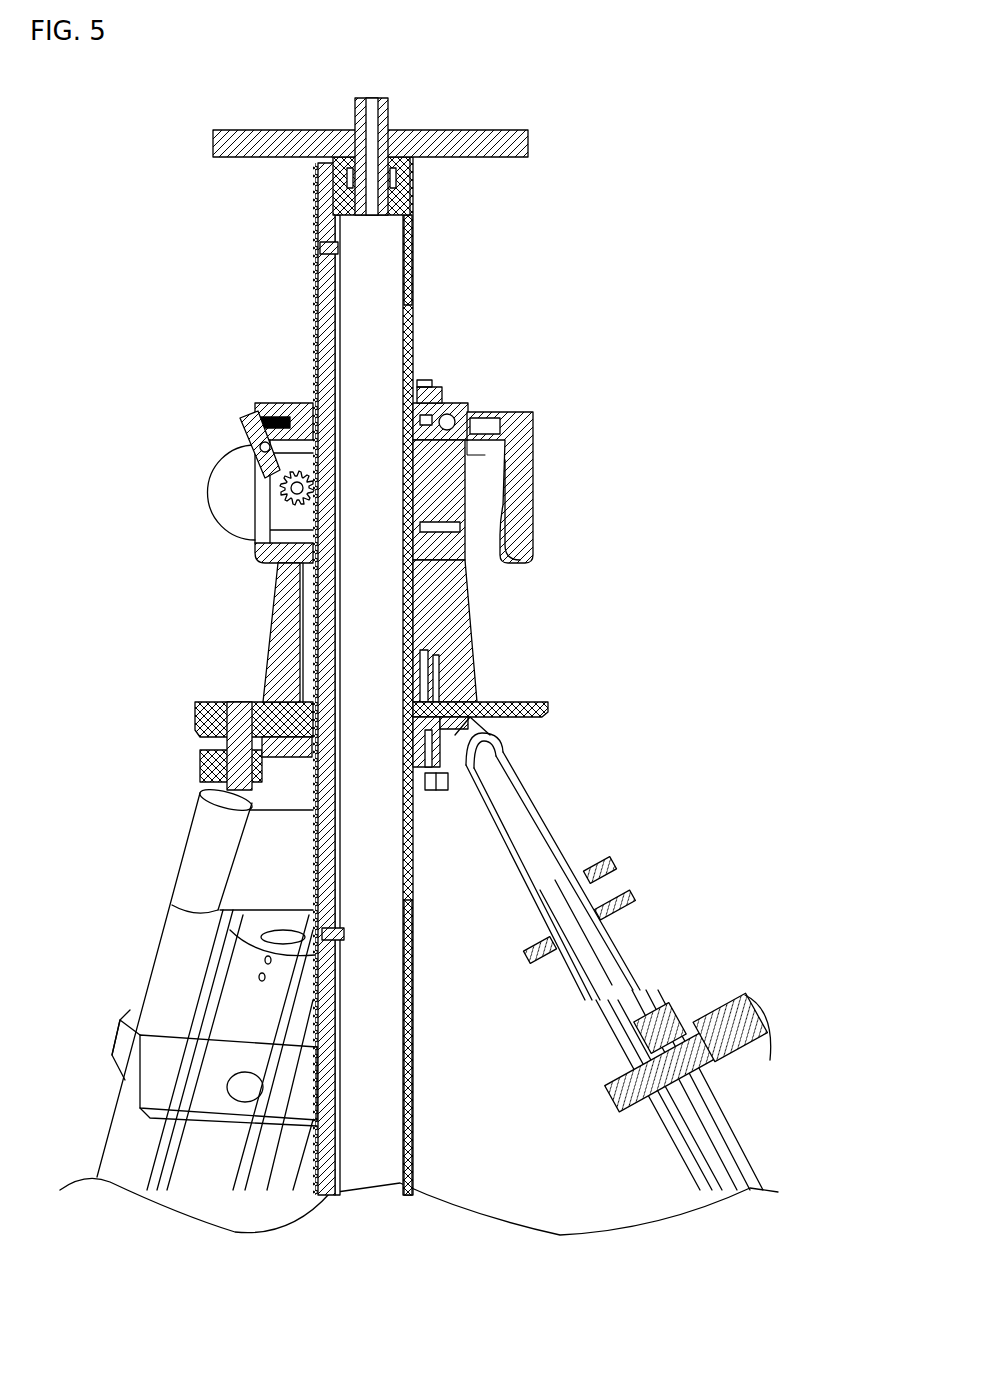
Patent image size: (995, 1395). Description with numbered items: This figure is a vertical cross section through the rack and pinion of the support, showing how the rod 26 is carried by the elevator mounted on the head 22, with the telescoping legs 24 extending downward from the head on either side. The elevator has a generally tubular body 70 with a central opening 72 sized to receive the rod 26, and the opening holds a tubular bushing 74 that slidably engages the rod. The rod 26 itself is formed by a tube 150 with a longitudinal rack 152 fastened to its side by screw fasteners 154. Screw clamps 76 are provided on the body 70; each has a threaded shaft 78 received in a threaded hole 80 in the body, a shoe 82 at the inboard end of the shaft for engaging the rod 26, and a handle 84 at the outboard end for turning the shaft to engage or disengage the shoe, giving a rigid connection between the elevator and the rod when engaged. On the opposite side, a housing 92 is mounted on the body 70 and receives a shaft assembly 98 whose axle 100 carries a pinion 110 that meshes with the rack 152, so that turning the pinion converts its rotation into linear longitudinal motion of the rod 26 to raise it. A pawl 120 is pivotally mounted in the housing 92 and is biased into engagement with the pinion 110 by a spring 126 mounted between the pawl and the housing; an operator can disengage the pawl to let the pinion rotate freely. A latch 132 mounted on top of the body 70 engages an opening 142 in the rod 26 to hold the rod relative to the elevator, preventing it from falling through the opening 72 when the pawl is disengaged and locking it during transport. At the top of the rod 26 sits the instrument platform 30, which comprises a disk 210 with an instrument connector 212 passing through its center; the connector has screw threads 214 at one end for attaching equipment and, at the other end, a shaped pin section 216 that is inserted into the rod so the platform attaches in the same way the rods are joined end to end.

The instrument platform 30 is at (424, 126).
The instrument connector 212 is at (419, 126).
The screw threads 214 is at (390, 118).
The disk 210 is at (530, 146).
The shaped pin section 216 is at (408, 212).
The screw fasteners 154 is at (318, 247).
The opening 142 is at (414, 250).
The rod 26 is at (416, 300).
The latch 132 is at (432, 373).
The shoe 82 is at (430, 382).
The threaded shaft 78 is at (460, 406).
The screw clamp 76 is at (542, 459).
The handle 84 is at (534, 536).
The threaded hole 80 is at (468, 453).
The housing 92 is at (211, 448).
The spring 126 is at (275, 402).
The pawl 120 is at (240, 430).
The pinion 110 is at (287, 497).
The shaft assembly 98 is at (280, 508).
The axle 100 is at (300, 523).
The tubular bushing 74 is at (459, 538).
The central opening 72 is at (387, 607).
The tubular body 70 is at (480, 686).
The head 22 is at (552, 716).
The tube 150 is at (414, 1108).
The telescoping legs 24 is at (100, 1130).
The longitudinal rack 152 is at (313, 1180).